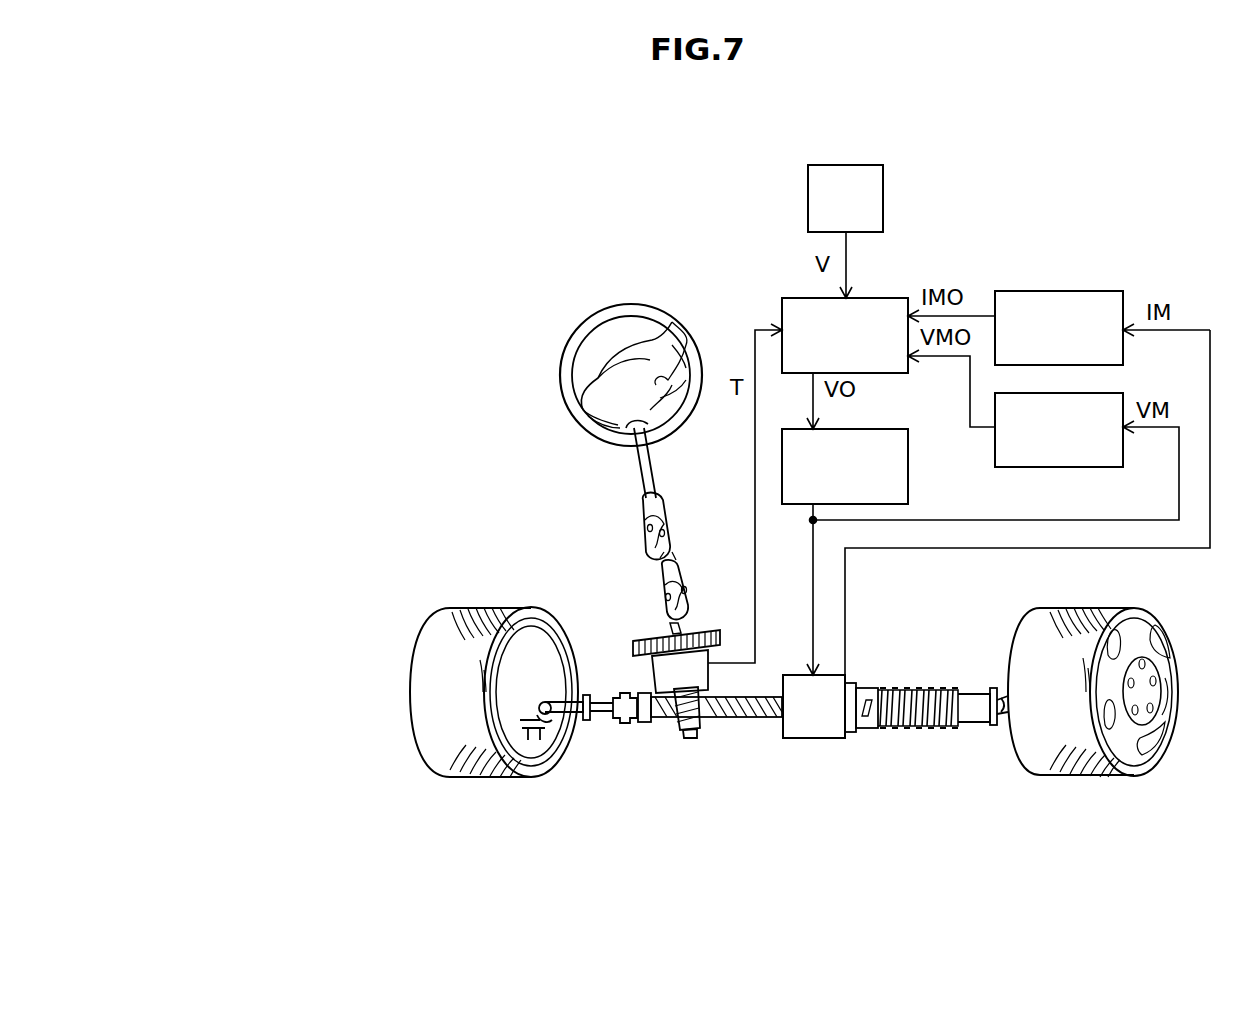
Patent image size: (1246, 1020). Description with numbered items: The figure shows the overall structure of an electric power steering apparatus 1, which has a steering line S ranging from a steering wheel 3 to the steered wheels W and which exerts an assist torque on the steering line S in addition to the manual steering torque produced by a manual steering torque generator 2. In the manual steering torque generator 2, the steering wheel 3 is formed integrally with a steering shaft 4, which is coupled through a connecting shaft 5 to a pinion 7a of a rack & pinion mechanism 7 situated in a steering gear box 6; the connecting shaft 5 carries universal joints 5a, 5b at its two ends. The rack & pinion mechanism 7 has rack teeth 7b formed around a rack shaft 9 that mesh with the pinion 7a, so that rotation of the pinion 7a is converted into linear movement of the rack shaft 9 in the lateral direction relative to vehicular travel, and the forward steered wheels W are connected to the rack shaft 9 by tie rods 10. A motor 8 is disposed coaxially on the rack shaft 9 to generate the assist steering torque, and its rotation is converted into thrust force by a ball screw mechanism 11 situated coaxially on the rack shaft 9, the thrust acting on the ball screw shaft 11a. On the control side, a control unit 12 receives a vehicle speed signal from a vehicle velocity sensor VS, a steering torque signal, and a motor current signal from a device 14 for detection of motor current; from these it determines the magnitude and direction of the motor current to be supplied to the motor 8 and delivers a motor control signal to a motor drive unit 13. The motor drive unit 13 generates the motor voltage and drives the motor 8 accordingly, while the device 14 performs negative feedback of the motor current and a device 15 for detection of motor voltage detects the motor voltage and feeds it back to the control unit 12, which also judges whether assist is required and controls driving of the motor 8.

The electric power steering apparatus 1 is at (548, 232).
The steering line S is at (668, 252).
The manual steering torque generator 2 is at (550, 538).
The steering wheel 3 is at (574, 343).
The steering shaft 4 is at (645, 470).
The connecting shaft 5 is at (670, 560).
The universal joint 5a is at (644, 540).
The universal joint 5b is at (658, 587).
The steering gear box 6 is at (700, 768).
The rack & pinion mechanism 7 is at (648, 784).
The pinion 7a is at (673, 726).
The rack teeth 7b is at (765, 717).
The motor 8 is at (812, 739).
The rack shaft 9 is at (967, 720).
The tie rods 10 is at (548, 722).
The ball screw mechanism 11 is at (900, 672).
The ball screw shaft 11a is at (920, 728).
The control unit 12 is at (876, 297).
The motor drive unit 13 is at (880, 428).
The device for detection of motor current 14 is at (1078, 290).
The device for detection of motor voltage 15 is at (995, 445).
The steered wheels W is at (414, 658).
The vehicle velocity sensor VS is at (885, 198).